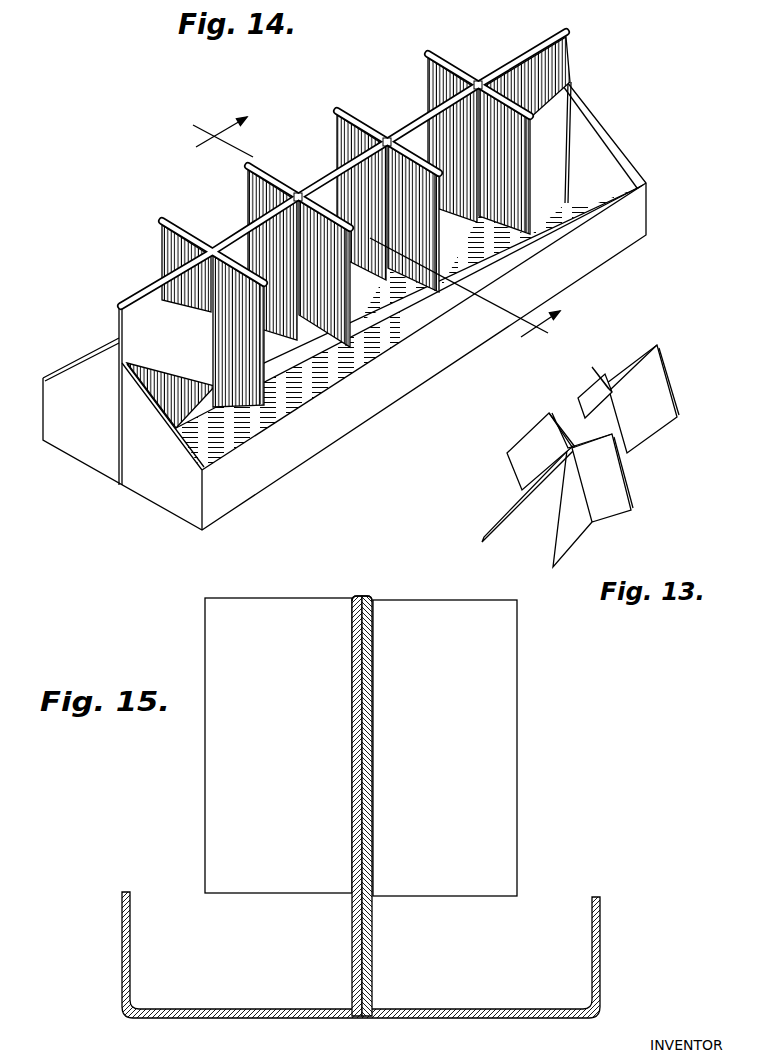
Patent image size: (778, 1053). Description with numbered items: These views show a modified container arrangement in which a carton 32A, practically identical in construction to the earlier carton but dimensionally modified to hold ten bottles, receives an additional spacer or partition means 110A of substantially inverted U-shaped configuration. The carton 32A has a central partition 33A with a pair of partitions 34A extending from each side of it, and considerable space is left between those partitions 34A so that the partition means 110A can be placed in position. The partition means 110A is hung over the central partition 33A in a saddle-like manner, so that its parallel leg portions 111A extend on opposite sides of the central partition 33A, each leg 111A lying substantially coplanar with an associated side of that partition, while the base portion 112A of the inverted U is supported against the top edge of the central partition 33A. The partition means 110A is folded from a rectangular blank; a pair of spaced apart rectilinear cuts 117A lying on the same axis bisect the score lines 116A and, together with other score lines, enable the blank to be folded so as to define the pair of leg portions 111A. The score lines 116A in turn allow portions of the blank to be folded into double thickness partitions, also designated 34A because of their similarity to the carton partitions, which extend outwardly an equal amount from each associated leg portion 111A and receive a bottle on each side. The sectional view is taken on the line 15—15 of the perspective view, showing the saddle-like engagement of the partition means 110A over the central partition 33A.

In FIG. 14, the carton 32A is at (648, 126).
In FIG. 15, the carton 32A is at (610, 797).
In FIG. 14, the central partition 33A is at (143, 287).
In FIG. 15, the central partition 33A is at (360, 596).
In FIG. 14, the partitions 34A is at (372, 126).
In FIG. 13, the partitions 34A is at (568, 398).
In FIG. 15, the partitions 34A is at (205, 748).
In FIG. 14, the partition means 110A is at (360, 283).
In FIG. 13, the partition means 110A is at (578, 421).
In FIG. 15, the partition means 110A is at (360, 776).
In FIG. 14, the leg portions 111A is at (292, 313).
In FIG. 13, the leg portions 111A is at (495, 522).
In FIG. 15, the leg portions 111A is at (359, 788).
In FIG. 14, the base portion 112A is at (453, 97).
In FIG. 13, the base portion 112A is at (532, 478).
In FIG. 15, the base portion 112A is at (352, 598).
In FIG. 14, the score lines 116A is at (312, 200).
In FIG. 13, the score lines 116A is at (607, 386).
In FIG. 14, the cuts 117A is at (333, 116).
In FIG. 14, the section line 15 is at (361, 240).